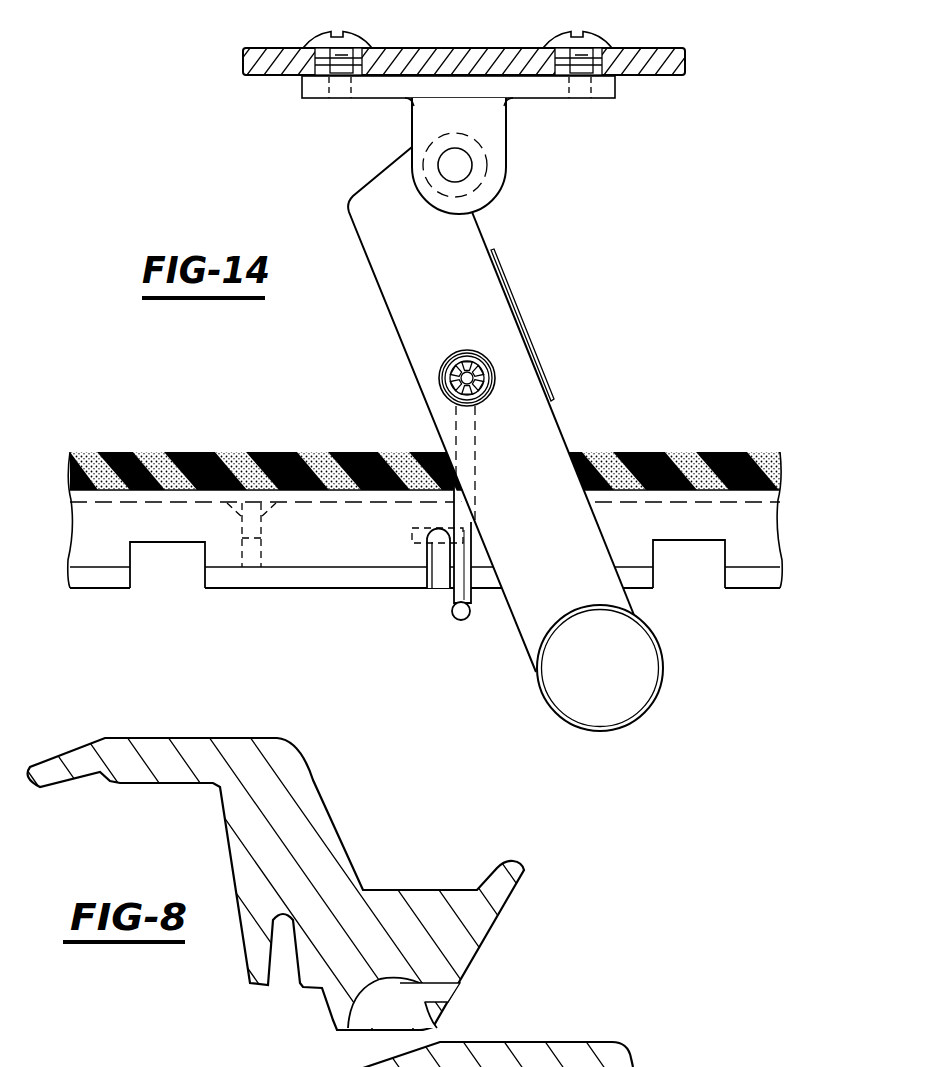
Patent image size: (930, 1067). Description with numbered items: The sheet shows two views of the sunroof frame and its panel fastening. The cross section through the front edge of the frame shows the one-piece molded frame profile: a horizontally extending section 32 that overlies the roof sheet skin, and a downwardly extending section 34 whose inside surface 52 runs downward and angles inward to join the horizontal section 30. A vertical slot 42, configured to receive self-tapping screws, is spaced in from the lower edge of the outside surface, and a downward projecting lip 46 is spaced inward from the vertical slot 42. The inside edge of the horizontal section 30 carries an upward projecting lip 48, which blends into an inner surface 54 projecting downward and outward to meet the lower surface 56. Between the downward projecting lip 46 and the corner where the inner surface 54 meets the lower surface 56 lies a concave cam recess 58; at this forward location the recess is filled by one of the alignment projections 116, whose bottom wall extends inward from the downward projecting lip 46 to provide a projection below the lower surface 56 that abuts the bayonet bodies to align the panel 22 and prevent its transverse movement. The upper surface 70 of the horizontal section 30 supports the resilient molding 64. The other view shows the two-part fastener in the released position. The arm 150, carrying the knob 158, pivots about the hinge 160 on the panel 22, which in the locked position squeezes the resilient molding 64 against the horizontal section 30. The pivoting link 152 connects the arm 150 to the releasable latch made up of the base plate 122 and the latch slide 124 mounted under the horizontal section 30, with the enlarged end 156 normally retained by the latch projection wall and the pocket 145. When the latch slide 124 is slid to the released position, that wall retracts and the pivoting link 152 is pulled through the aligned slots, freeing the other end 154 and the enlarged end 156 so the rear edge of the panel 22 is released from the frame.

In FIG. 14, the panel 22 is at (438, 48).
In FIG. 14, the hinge 160 is at (503, 160).
In FIG. 14, the arm 150 is at (556, 328).
In FIG. 14, the knob 158 is at (637, 683).
In FIG. 14, the pivoting link 152 is at (455, 513).
In FIG. 14, the other end of the pivoting link 154 is at (448, 594).
In FIG. 14, the enlarged end 156 is at (465, 613).
In FIG. 14, the pocket 145 is at (412, 537).
In FIG. 14, the resilient molding 64 is at (178, 453).
In FIG. 14, the horizontal section 30 is at (443, 512).
In FIG. 8, the horizontal section 30 is at (405, 883).
In FIG. 14, the base plate 122 is at (260, 582).
In FIG. 14, the latch slide 124 is at (672, 566).
In FIG. 8, the horizontally extending section 32 is at (168, 747).
In FIG. 8, the inside surface 52 is at (325, 803).
In FIG. 8, the downwardly extending section 34 is at (348, 878).
In FIG. 8, the upper surface 70 is at (442, 890).
In FIG. 8, the upward projecting lip 48 is at (522, 866).
In FIG. 8, the inner surface 54 is at (493, 945).
In FIG. 8, the cam recess 58 is at (470, 985).
In FIG. 8, the lower surface 56 is at (455, 1010).
In FIG. 8, the vertical slot 42 is at (285, 962).
In FIG. 8, the downward projecting lip 46 is at (337, 1015).
In FIG. 8, the alignment projections 116 is at (455, 1033).